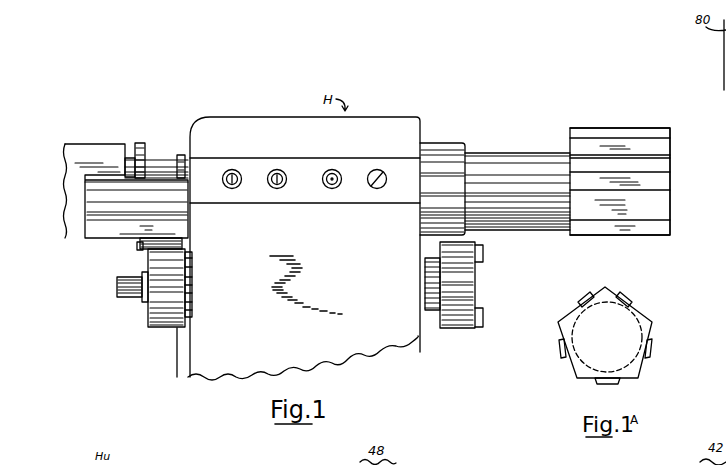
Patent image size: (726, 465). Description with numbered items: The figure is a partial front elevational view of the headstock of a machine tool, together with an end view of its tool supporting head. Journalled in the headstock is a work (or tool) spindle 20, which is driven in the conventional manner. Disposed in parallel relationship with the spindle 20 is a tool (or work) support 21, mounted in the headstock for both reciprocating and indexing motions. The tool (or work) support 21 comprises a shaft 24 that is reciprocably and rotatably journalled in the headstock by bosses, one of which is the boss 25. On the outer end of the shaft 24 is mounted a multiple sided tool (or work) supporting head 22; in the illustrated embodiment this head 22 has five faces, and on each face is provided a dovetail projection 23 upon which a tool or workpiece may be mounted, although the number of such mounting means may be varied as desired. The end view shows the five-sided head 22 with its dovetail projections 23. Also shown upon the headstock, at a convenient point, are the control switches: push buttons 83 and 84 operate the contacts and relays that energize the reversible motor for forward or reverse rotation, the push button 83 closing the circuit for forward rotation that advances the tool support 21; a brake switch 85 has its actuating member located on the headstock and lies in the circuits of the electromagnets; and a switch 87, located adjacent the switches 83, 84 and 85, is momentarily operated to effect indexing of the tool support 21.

In FIG. 1, the work (or tool) spindle 20 is at (462, 298).
In FIG. 1, the tool (or work) support 21 is at (511, 141).
In FIG. 1, the tool (or work) supporting head 22 is at (614, 143).
In FIG. 1A, the tool (or work) supporting head 22 is at (652, 322).
In FIG. 1, the dovetail projection 23 is at (655, 210).
In FIG. 1A, the dovetail projection 23 is at (630, 300).
In FIG. 1, the shaft 24 is at (527, 215).
In FIG. 1, the boss 25 is at (443, 162).
In FIG. 1, the push button 83 is at (237, 170).
In FIG. 1, the push button 84 is at (280, 170).
In FIG. 1, the brake switch 85 is at (380, 168).
In FIG. 1, the switch 87 is at (336, 170).